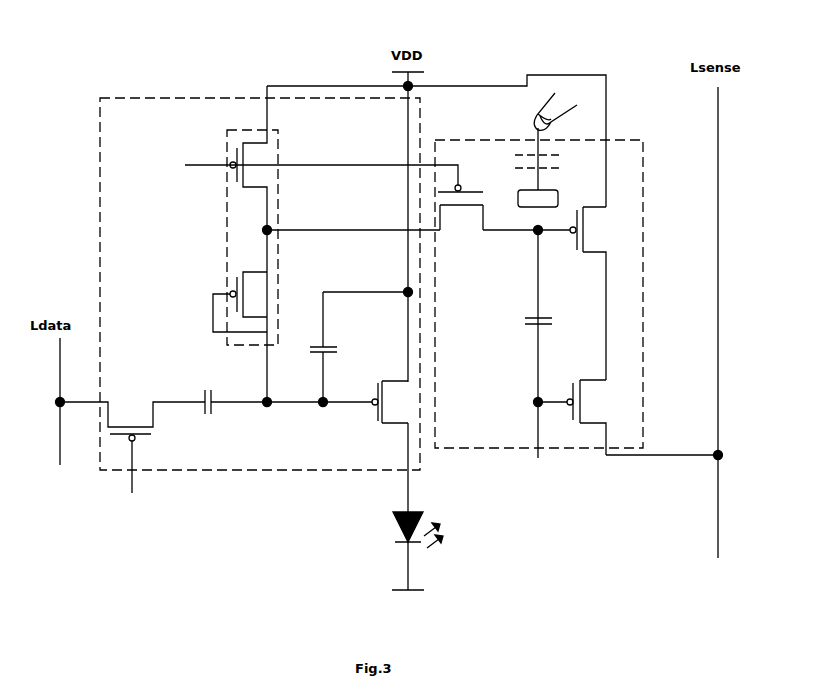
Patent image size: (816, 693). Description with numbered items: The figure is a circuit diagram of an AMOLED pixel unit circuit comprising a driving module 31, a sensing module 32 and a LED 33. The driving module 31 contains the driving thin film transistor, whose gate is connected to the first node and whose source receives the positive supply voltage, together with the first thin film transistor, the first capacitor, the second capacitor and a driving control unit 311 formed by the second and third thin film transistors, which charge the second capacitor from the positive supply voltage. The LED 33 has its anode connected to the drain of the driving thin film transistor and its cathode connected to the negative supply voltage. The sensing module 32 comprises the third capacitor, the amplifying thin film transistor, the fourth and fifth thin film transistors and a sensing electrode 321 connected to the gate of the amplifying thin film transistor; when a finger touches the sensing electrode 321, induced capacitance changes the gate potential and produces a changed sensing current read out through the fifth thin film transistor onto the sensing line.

The driving module 31 is at (256, 298).
The driving control unit 311 is at (248, 212).
The sensing module 32 is at (565, 292).
The sensing electrode 321 is at (535, 200).
The LED 33 is at (400, 535).